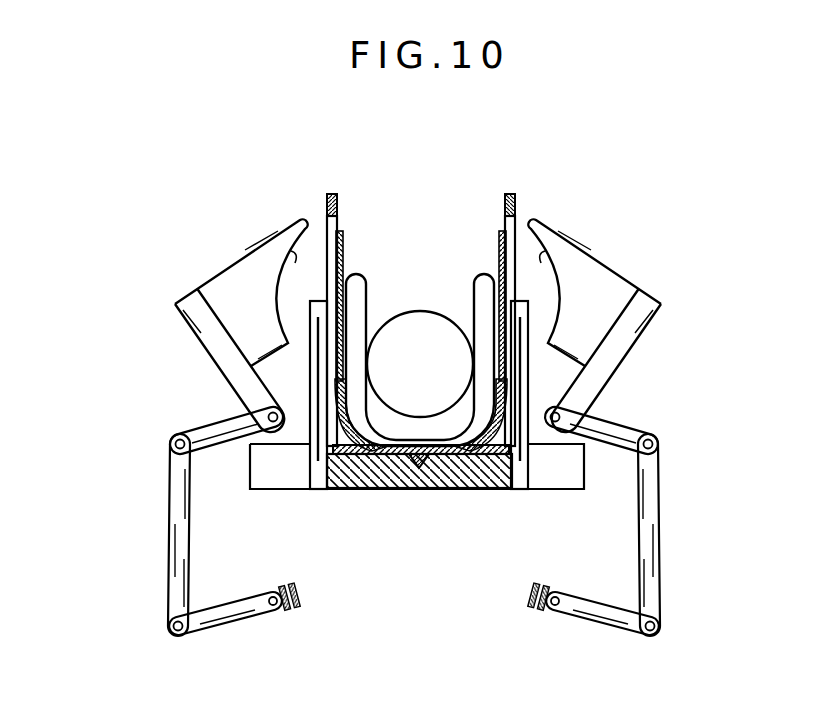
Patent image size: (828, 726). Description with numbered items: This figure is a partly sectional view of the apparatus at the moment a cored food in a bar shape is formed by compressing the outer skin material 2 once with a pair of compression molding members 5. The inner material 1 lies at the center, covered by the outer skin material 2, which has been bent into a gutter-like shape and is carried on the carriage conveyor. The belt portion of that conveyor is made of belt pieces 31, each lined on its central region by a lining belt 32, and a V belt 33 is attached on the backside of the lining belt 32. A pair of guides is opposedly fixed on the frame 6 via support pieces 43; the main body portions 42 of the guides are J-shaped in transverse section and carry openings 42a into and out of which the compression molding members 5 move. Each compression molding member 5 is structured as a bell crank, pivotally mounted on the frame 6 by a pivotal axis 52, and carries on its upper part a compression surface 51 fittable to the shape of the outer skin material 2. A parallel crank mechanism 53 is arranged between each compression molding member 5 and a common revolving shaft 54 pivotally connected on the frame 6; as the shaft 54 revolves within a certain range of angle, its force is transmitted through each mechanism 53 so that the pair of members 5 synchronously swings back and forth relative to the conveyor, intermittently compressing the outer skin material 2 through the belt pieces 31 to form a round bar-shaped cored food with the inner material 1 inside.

The inner material 1 is at (414, 320).
The outer skin material 2 is at (358, 278).
The belt piece 31 is at (498, 272).
The lining belt 32 is at (452, 462).
The V belt 33 is at (417, 471).
The main body portion of guide 42 is at (511, 197).
The opening 42a is at (328, 223).
The support piece 43 is at (315, 467).
The compression molding member 5 is at (247, 284).
The compression surface 51 is at (294, 252).
The pivotal axis 52 is at (262, 409).
The parallel crank mechanism 53 is at (170, 532).
The common revolving shaft 54 is at (272, 610).
The frame 6 is at (366, 456).